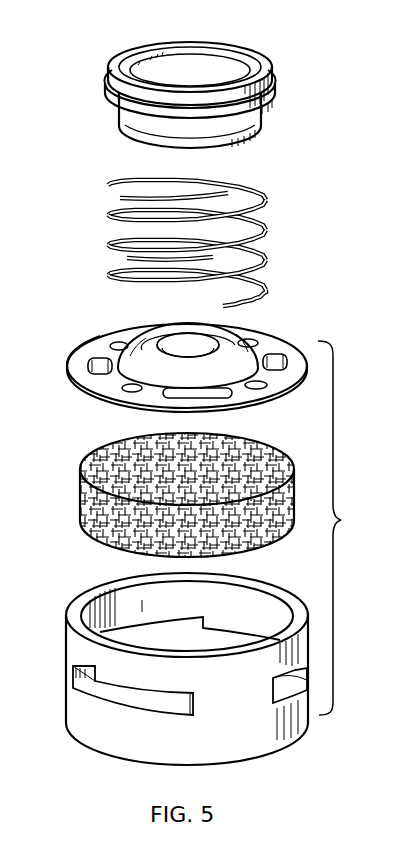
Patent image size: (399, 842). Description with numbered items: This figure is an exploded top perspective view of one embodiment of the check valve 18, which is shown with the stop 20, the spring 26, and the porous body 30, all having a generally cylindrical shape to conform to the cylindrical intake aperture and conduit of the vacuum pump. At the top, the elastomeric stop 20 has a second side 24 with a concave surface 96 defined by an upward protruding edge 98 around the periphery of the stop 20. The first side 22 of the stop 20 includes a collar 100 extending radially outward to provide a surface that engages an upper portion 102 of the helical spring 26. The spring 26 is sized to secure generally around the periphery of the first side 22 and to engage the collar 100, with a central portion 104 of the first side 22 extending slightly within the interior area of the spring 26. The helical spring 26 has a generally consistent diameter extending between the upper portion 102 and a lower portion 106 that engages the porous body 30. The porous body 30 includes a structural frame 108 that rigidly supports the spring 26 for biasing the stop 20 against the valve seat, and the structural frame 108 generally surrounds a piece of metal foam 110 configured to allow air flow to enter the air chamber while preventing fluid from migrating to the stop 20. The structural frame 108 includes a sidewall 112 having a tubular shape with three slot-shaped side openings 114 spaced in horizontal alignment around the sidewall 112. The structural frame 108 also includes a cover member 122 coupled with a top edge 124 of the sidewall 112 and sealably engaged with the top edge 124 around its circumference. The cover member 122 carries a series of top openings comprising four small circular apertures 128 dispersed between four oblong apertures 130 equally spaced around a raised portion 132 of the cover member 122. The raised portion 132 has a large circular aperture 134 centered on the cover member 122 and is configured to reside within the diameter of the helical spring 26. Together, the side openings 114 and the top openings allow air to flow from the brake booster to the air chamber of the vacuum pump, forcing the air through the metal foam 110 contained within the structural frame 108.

The check valve 18 is at (96, 37).
The stop 20 is at (273, 90).
The first side 22 is at (249, 143).
The second side 24 is at (170, 63).
The helical spring 26 is at (268, 236).
The porous body 30 is at (342, 528).
The concave surface 96 is at (197, 66).
The upward protruding edge 98 is at (263, 63).
The collar 100 is at (271, 113).
The upper portion 102 is at (257, 177).
The central portion 104 is at (137, 134).
The lower portion 106 is at (263, 293).
The structural frame 108 is at (84, 352).
The metal foam 110 is at (80, 483).
The sidewall 112 is at (236, 742).
The side openings 114 is at (116, 695).
The cover member 122 is at (281, 343).
The top edge 124 is at (78, 603).
The small circular apertures 128 is at (124, 341).
The oblong apertures 130 is at (88, 363).
The raised portion 132 is at (222, 373).
The large circular aperture 134 is at (193, 345).